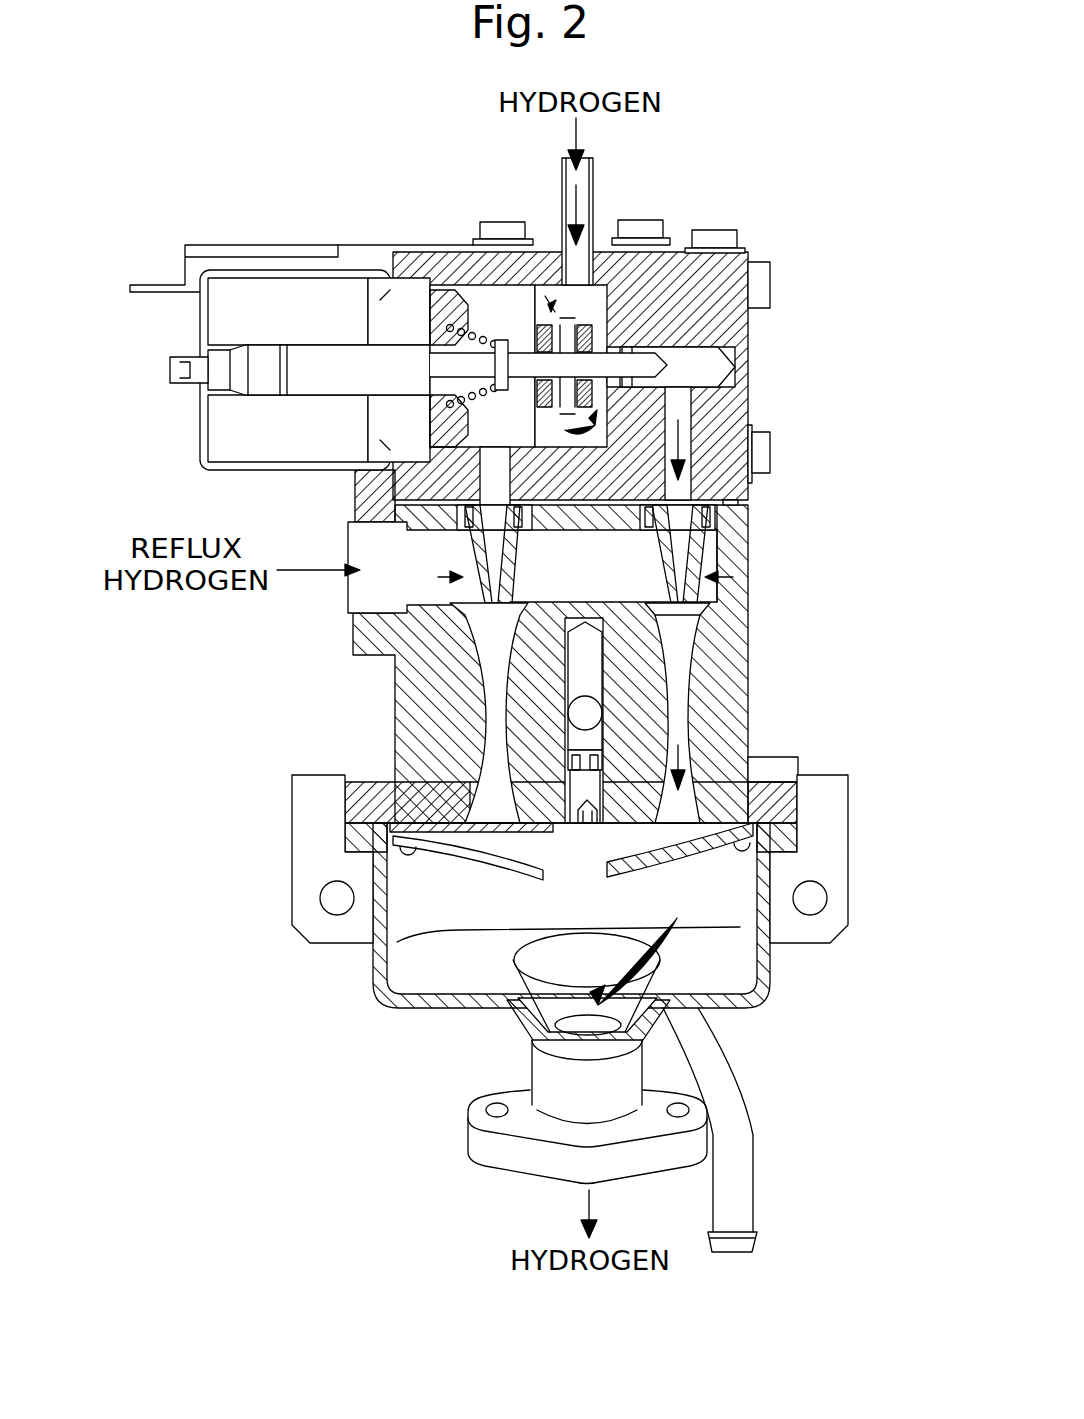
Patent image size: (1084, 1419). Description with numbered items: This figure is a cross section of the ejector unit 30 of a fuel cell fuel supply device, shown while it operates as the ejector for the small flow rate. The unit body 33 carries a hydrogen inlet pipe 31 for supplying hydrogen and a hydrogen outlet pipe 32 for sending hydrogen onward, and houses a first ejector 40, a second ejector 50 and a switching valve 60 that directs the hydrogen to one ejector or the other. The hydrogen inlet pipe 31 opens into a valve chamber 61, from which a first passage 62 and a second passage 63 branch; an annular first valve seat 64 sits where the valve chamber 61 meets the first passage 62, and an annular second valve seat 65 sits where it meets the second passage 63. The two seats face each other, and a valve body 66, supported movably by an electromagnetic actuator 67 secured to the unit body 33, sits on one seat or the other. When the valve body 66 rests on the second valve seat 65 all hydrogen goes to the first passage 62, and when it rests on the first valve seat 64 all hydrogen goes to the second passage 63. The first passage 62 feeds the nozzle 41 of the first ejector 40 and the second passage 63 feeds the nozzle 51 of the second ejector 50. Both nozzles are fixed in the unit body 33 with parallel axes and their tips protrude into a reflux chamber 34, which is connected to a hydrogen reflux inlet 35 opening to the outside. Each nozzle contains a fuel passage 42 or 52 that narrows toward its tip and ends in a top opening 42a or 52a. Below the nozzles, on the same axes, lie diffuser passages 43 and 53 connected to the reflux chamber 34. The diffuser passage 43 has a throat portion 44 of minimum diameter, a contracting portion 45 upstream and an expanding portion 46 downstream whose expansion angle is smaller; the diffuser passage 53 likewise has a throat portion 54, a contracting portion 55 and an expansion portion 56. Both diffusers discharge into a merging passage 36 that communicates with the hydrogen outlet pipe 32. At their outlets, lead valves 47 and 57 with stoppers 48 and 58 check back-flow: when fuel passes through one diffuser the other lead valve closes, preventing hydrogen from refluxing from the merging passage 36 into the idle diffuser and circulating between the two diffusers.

The ejector unit 30 is at (270, 225).
The hydrogen inlet pipe 31 is at (597, 190).
The hydrogen outlet pipe 32 is at (473, 1148).
The unit body 33 is at (395, 722).
The reflux chamber 34 is at (735, 495).
The hydrogen reflux inlet 35 is at (400, 580).
The merging passage 36 is at (710, 962).
The first ejector 40 is at (712, 577).
The nozzle 41 is at (705, 550).
The fuel passage 42 is at (728, 598).
The top opening 42a is at (690, 635).
The diffuser passage 43 is at (675, 737).
The throat portion 44 is at (678, 690).
The contracting portion 45 is at (675, 660).
The expanding portion 46 is at (790, 812).
The lead valve 47 is at (617, 842).
The stopper 48 is at (670, 840).
The second ejector 50 is at (348, 592).
The nozzle 51 is at (467, 548).
The fuel passage 52 is at (495, 558).
The top opening 52a is at (500, 613).
The diffuser passage 53 is at (493, 748).
The throat portion 54 is at (493, 690).
The contracting portion 55 is at (485, 640).
The expansion portion 56 is at (493, 800).
The lead valve 57 is at (533, 832).
The stopper 58 is at (488, 850).
The switching valve 60 is at (517, 240).
The valve chamber 61 is at (545, 255).
The first passage 62 is at (710, 410).
The second passage 63 is at (375, 498).
The first valve seat 64 is at (617, 335).
The second valve seat 65 is at (452, 292).
The valve body 66 is at (565, 305).
The electromagnetic actuator 67 is at (205, 440).